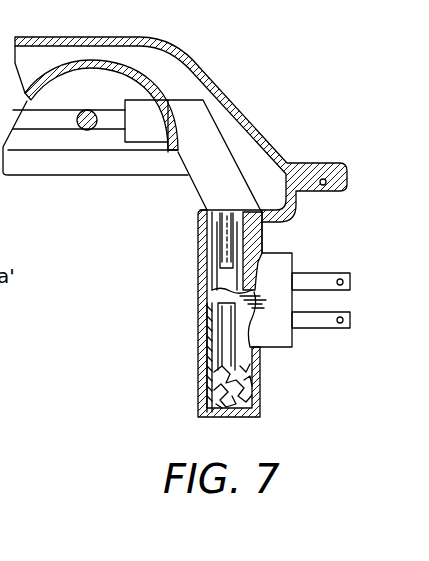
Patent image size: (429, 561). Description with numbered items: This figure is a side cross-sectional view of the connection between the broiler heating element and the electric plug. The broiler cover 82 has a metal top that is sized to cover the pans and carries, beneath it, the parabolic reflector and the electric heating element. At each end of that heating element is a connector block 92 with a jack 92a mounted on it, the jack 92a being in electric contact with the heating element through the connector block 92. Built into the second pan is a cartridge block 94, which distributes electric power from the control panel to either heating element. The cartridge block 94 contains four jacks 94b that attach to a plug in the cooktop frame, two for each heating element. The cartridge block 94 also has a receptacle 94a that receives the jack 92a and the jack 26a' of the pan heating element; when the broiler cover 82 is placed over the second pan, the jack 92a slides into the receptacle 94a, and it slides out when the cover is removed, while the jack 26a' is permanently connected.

The broiler cover 82 is at (222, 84).
The connector block 92 is at (212, 142).
The jack 92a is at (227, 243).
The receptacle 94a is at (245, 246).
The cartridge block 94 is at (280, 333).
The jacks 94b is at (325, 282).
The jack 26a' is at (187, 336).